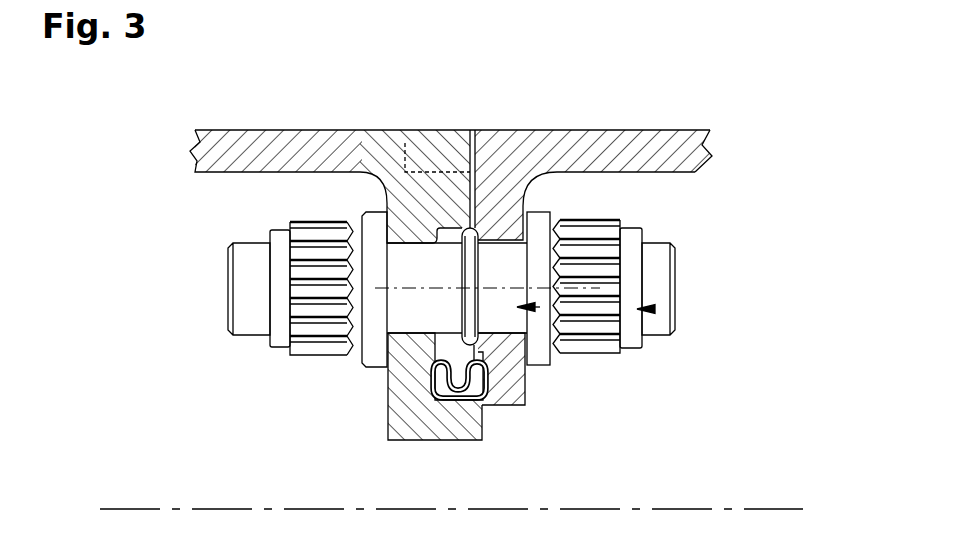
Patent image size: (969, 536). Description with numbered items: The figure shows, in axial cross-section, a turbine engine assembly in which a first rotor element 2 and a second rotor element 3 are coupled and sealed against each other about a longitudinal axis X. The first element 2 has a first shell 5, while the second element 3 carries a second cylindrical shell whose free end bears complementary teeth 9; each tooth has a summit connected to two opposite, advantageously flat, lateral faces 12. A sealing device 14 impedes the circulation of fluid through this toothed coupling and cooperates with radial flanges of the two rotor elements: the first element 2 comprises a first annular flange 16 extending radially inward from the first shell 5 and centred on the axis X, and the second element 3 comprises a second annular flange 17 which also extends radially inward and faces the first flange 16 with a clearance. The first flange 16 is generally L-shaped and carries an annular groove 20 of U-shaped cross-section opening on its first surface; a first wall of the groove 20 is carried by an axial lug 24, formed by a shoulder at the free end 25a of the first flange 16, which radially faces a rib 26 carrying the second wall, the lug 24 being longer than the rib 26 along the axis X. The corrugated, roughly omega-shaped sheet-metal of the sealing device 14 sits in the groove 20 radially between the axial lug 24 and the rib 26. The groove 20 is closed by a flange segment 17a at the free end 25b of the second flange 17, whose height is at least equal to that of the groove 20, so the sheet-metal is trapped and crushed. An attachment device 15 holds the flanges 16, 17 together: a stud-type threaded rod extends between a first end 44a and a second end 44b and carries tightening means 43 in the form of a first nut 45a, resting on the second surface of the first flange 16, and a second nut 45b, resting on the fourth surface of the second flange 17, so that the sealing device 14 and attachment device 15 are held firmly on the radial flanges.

The first rotor element 2 is at (195, 150).
The second rotor element 3 is at (710, 141).
The first shell 5 is at (362, 147).
The complementary teeth 9 is at (445, 150).
The lateral faces 12 is at (613, 150).
The sealing device 14 is at (513, 405).
The attachment device 15 is at (572, 307).
The first annular flange 16 is at (387, 205).
The second annular flange 17 is at (495, 210).
The flange segment 17a is at (497, 375).
The annular groove 20 is at (435, 400).
The axial lug 24 is at (443, 428).
The free end of the first flange 25a is at (408, 440).
The free end of the second flange 25b is at (525, 400).
The rib 26 is at (432, 372).
The tightening means 43 is at (655, 309).
The first end 44a is at (252, 285).
The second end 44b is at (662, 272).
The first nut 45a is at (307, 348).
The second nut 45b is at (612, 265).
The longitudinal axis X is at (770, 509).